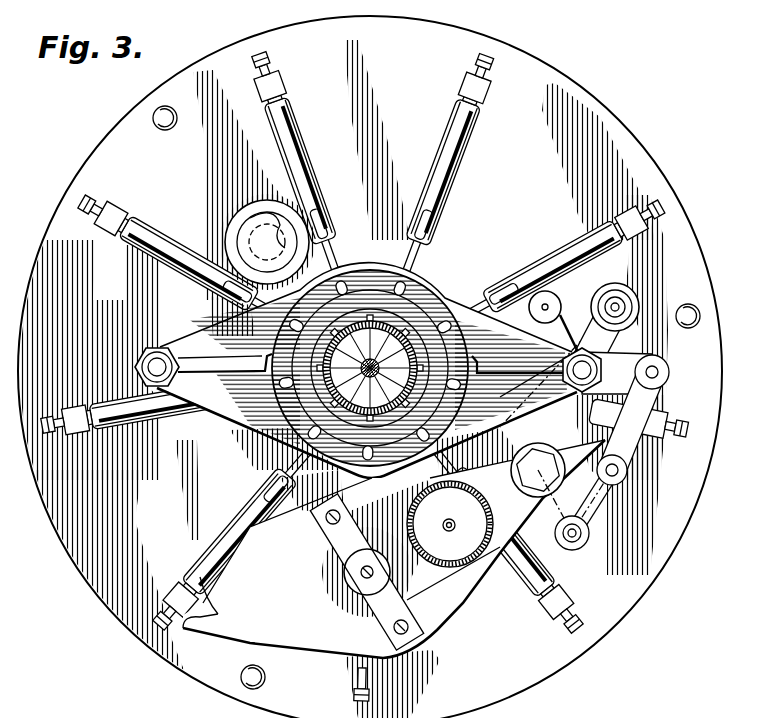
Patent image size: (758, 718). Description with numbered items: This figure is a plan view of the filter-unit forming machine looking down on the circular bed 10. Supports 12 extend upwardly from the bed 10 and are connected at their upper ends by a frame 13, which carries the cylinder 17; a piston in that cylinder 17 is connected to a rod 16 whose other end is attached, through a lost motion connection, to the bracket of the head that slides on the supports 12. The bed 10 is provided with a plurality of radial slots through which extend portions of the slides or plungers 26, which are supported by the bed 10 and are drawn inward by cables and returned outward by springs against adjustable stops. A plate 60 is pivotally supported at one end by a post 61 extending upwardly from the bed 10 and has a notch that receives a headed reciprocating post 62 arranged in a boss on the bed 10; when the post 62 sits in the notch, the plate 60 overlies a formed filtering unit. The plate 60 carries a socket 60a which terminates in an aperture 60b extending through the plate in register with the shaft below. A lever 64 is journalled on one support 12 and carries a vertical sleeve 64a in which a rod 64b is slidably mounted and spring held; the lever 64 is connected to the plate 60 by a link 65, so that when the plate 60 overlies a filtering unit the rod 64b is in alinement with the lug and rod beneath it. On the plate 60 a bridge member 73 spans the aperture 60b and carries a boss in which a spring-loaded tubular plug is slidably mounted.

The bed 10 is at (627, 152).
The supports 12 is at (157, 365).
The frame 13 is at (197, 337).
The rod 16 is at (396, 288).
The cylinder 17 is at (352, 300).
The slides or plungers 26 is at (444, 183).
The plate 60 is at (438, 608).
The socket 60a is at (467, 572).
The aperture 60b is at (343, 598).
The post 61 is at (597, 507).
The headed reciprocating post 62 is at (258, 228).
The lever 64 is at (640, 355).
The vertical sleeve 64a is at (560, 290).
The rod 64b is at (543, 305).
The link 65 is at (643, 401).
The bridge member 73 is at (327, 530).